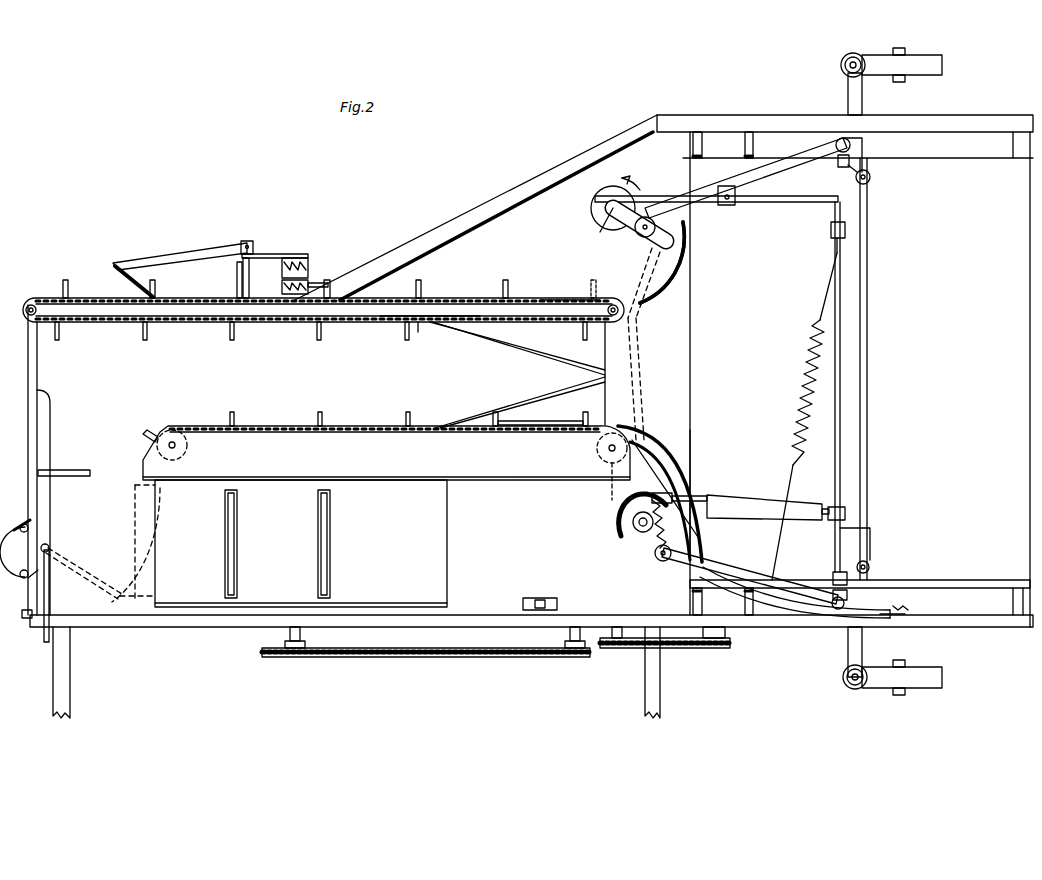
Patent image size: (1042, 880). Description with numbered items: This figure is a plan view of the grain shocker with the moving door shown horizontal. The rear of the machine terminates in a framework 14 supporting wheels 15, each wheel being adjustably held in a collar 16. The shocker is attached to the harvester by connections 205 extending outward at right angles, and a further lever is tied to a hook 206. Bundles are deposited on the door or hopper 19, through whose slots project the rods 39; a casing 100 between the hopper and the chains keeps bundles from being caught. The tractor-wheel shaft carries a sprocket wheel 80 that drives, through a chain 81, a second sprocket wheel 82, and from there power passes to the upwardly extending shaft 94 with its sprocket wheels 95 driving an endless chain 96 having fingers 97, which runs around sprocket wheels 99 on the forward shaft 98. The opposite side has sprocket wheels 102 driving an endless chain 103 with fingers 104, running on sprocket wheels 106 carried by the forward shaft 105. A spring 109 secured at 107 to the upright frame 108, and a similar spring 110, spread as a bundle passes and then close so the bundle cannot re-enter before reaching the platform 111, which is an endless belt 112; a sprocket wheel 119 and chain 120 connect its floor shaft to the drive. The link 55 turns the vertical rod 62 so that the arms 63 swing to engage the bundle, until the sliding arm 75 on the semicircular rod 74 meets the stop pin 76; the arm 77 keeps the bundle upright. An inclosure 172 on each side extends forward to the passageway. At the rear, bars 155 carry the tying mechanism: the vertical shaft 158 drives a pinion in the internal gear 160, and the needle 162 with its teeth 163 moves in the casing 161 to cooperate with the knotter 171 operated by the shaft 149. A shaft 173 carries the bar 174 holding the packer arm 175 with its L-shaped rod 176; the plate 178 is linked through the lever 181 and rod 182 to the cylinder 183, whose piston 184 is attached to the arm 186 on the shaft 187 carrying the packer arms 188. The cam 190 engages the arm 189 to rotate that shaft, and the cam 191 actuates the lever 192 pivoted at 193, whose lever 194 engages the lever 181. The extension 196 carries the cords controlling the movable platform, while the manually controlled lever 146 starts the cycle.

The framework 14 is at (912, 126).
The wheel 15 is at (912, 68).
The collar 16 is at (842, 70).
The door or hopper 19 is at (118, 560).
The rods 39 is at (237, 560).
The link 55 is at (185, 258).
The vertical rod 62 is at (84, 562).
The arms 63 is at (50, 612).
The semicircular rod 74 is at (30, 528).
The sliding arm 75 is at (50, 548).
The stop pin 76 is at (40, 572).
The arm 77 is at (74, 477).
The sprocket wheel 80 is at (292, 658).
The chain 81 is at (395, 658).
The sprocket wheel 82 is at (576, 658).
The shaft 94 is at (607, 450).
The sprocket wheels 95 is at (607, 488).
The endless chain 96 is at (556, 424).
The fingers 97 is at (409, 420).
The sprocket-wheel shaft 98 is at (178, 445).
The sprocket wheels 99 is at (165, 430).
The casing 100 is at (386, 453).
The sprocket wheels 102 is at (607, 311).
The endless chain 103 is at (566, 300).
The fingers 104 is at (505, 296).
The shaft 105 is at (32, 305).
The sprocket wheels 106 is at (40, 310).
The securing point 107 is at (415, 330).
The upright frame 108 is at (430, 309).
The spring 109 is at (520, 345).
The spring 110 is at (512, 403).
The platform 111 is at (860, 379).
The endless belt 112 is at (714, 478).
The sprocket wheel 119 is at (723, 650).
The chain 120 is at (626, 650).
The manually controlled lever 146 is at (541, 598).
The shaft 149 is at (616, 229).
The bars 155 is at (760, 580).
The vertical shaft 158 is at (634, 518).
The internal gear 160 is at (636, 530).
The casing 161 is at (806, 608).
The needle 162 is at (690, 446).
The teeth 163 is at (906, 609).
The knotter 171 is at (641, 233).
The inclosure 172 is at (965, 168).
The shaft 173 is at (842, 466).
The bar 174 is at (869, 483).
The packer arm 175 is at (871, 180).
The L-shaped rod 176 is at (872, 528).
The plate 178 is at (832, 522).
The lever 181 is at (848, 231).
The rod 182 is at (830, 476).
The cylinder 183 is at (765, 503).
The piston 184 is at (703, 509).
The arm 186 is at (676, 493).
The shaft 187 is at (700, 497).
The packer arms 188 is at (632, 430).
The arm 189 is at (618, 536).
The cam 190 is at (656, 556).
The cam 191 is at (607, 208).
The lever 192 is at (672, 196).
The pivot 193 is at (727, 207).
The lever 194 is at (834, 215).
The extension 196 is at (852, 150).
The connections 205 is at (66, 674).
The hook 206 is at (33, 630).